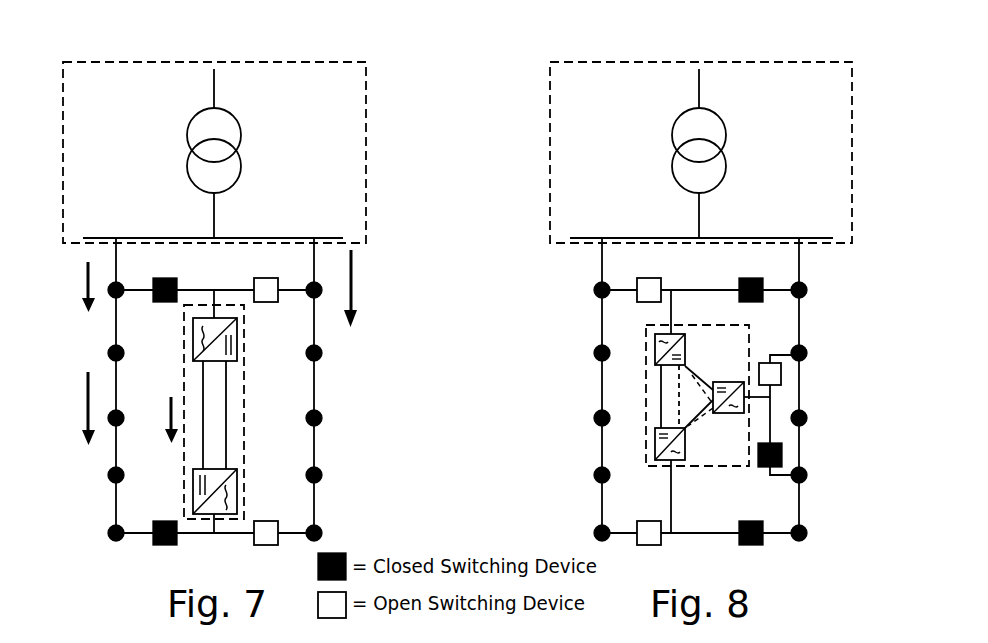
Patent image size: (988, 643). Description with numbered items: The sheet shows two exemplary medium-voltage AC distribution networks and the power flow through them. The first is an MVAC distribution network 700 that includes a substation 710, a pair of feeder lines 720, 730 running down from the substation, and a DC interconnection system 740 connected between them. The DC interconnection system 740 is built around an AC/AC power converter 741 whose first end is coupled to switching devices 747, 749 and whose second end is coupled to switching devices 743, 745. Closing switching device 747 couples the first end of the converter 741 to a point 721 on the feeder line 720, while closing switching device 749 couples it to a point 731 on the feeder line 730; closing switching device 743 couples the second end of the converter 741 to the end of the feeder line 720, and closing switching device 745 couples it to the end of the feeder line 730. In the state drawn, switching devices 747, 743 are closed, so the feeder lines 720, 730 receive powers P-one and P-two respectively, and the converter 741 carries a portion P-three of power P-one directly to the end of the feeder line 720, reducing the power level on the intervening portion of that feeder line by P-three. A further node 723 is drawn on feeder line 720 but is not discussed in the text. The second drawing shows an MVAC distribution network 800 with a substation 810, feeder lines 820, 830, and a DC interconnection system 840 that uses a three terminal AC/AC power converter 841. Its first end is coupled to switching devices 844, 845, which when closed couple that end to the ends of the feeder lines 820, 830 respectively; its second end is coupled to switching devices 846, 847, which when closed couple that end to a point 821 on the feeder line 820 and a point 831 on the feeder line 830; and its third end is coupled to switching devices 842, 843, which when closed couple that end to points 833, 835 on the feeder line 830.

In FIG. 7, the MVAC distribution network 700 is at (395, 138).
In FIG. 7, the substation 710 is at (322, 62).
In FIG. 7, the feeder line 720 is at (114, 327).
In FIG. 7, the point on feeder line 720 721 is at (125, 297).
In FIG. 7, the first bus node 723 is at (125, 355).
In FIG. 7, the feeder line 730 is at (318, 385).
In FIG. 7, the point on feeder line 730 731 is at (305, 297).
In FIG. 7, the DC interconnection system 740 is at (137, 543).
In FIG. 7, the AC/AC power converter 741 is at (246, 383).
In FIG. 7, the switching device 743 is at (165, 519).
In FIG. 7, the switching device 745 is at (268, 519).
In FIG. 7, the switching device 747 is at (178, 283).
In FIG. 7, the switching device 749 is at (280, 283).
In FIG. 8, the MVAC distribution network 800 is at (881, 138).
In FIG. 8, the substation 810 is at (809, 62).
In FIG. 8, the feeder line 820 is at (600, 327).
In FIG. 8, the point on feeder line 820 821 is at (608, 285).
In FIG. 8, the feeder line 830 is at (806, 408).
In FIG. 8, the point on feeder line 830 831 is at (809, 290).
In FIG. 8, the point on feeder line 830 833 is at (809, 353).
In FIG. 8, the point on feeder line 830 835 is at (809, 475).
In FIG. 8, the DC interconnection system 840 is at (778, 542).
In FIG. 8, the three terminal AC/AC power converter 841 is at (703, 466).
In FIG. 8, the switching device 842 is at (782, 374).
In FIG. 8, the switching device 843 is at (784, 455).
In FIG. 8, the switching device 844 is at (650, 519).
In FIG. 8, the switching device 845 is at (748, 519).
In FIG. 8, the switching device 846 is at (659, 283).
In FIG. 8, the switching device 847 is at (761, 283).